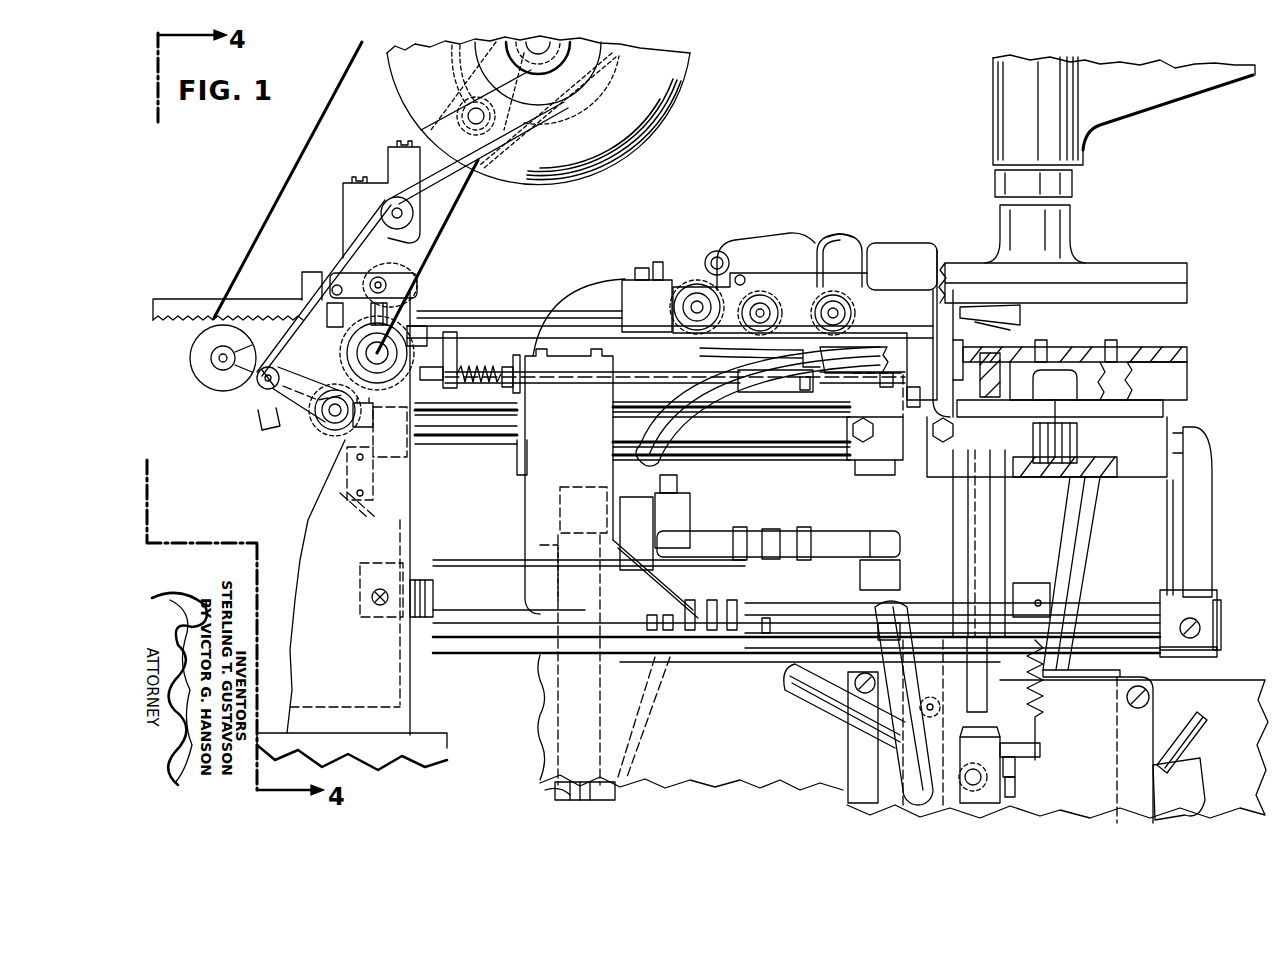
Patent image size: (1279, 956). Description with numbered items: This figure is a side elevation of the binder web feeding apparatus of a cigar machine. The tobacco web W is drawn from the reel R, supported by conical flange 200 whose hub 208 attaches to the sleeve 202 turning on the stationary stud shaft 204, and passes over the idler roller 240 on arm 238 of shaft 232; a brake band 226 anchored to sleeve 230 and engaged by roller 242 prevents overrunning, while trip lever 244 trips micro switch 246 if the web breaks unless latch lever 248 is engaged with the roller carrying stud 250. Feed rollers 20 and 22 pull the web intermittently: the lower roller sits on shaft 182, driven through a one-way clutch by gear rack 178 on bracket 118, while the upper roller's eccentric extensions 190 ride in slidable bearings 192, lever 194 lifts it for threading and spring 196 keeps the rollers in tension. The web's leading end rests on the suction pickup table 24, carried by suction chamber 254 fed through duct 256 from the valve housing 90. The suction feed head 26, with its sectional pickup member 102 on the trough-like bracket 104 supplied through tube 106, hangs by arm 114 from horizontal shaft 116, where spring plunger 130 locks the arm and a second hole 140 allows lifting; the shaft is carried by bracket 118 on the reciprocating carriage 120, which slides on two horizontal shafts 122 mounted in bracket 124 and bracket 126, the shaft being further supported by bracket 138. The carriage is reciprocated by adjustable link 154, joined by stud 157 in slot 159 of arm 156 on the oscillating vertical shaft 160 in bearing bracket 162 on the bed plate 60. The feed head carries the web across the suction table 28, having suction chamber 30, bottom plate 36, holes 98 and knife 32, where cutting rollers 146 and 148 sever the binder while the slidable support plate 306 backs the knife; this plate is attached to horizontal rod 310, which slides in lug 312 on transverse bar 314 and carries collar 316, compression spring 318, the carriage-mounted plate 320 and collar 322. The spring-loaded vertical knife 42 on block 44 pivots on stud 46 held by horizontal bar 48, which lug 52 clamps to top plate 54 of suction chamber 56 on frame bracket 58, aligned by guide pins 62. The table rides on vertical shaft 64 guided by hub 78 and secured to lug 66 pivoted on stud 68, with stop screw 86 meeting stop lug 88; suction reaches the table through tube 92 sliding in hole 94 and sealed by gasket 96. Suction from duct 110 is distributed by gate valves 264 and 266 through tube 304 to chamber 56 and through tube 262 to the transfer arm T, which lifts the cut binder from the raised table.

The tobacco web W is at (318, 130).
The reel R is at (684, 77).
The binder transfer arm T is at (1085, 262).
The upper web feed roller 20 is at (420, 290).
The lower web feed roller 22 is at (418, 308).
The suction pickup table 24 is at (571, 336).
The reciprocating suction feed head 26 is at (848, 228).
The suction table 28 is at (1157, 350).
The suction chamber 30 is at (1128, 380).
The knife 32 is at (903, 360).
The bottom plate 36 is at (1115, 370).
The swingable spring-loaded vertical knife 42 is at (1018, 322).
The block 44 is at (956, 328).
The vertical stud 46 is at (942, 268).
The horizontal bar 48 is at (952, 370).
The lug 52 is at (745, 362).
The top plate 54 is at (1170, 417).
The suction chamber 56 is at (1160, 443).
The frame bracket 58 is at (1110, 573).
The bed plate 60 is at (1255, 677).
The guide pins 62 is at (905, 388).
The vertical shaft 64 is at (1005, 375).
The lug 66 is at (1003, 766).
The stud 68 is at (973, 770).
The hub 78 is at (1010, 540).
The adjustable stop screw 86 is at (1010, 745).
The stop lug 88 is at (1000, 786).
The valve housing 90 is at (1150, 702).
The tube 92 is at (1077, 446).
The hole 94 is at (1075, 414).
The gasket 96 is at (1085, 453).
The holes 98 is at (1028, 347).
The sectional pickup member 102 is at (880, 287).
The hollow trough-like supporting bracket 104 is at (845, 240).
The tube 106 is at (818, 261).
The duct 110 is at (1190, 768).
The arm 114 is at (750, 242).
The horizontal shaft 116 is at (688, 265).
The bracket 118 is at (609, 290).
The reciprocating carriage 120 is at (525, 522).
The horizontal shafts 122 is at (465, 445).
The bracket 124 is at (302, 292).
The bracket 126 is at (1212, 552).
The spring plunger 130 is at (714, 250).
The bracket 138 is at (625, 340).
The second hole 140 is at (757, 258).
The cutting roller 146 is at (856, 306).
The cutting roller 148 is at (762, 283).
The adjustable link 154 is at (700, 528).
The arm 156 is at (690, 492).
The stud 157 is at (680, 478).
The slot 159 is at (657, 488).
The oscillating vertical shaft 160 is at (595, 480).
The bearing bracket 162 is at (558, 548).
The horizontal gear rack 178 is at (205, 300).
The horizontal shaft 182 is at (437, 337).
The eccentric extensions 190 is at (368, 256).
The vertically slidable bearings 192 is at (420, 275).
The lever 194 is at (345, 268).
The spring 196 is at (348, 312).
The conical flange 200 is at (587, 84).
The sleeve 202 is at (565, 60).
The stationary stud shaft 204 is at (548, 48).
The hub 208 is at (580, 68).
The brake band 226 is at (343, 252).
The sleeve 230 is at (325, 428).
The shaft 232 is at (330, 432).
The arm 238 is at (283, 386).
The idler roller 240 is at (208, 374).
The roller 242 is at (270, 392).
The trip lever 244 is at (345, 475).
The micro switch 246 is at (345, 492).
The latch lever 248 is at (260, 420).
The roller carrying stud 250 is at (262, 386).
The suction chamber 254 is at (748, 350).
The hose or duct 256 is at (672, 402).
The tube 262 is at (1192, 728).
The gate valve 264 is at (960, 645).
The gate valve 266 is at (1118, 670).
The duct or tube 304 is at (1058, 545).
The horizontally slidable support plate 306 is at (822, 365).
The horizontal rod 310 is at (670, 375).
The lug 312 is at (436, 385).
The transverse bar 314 is at (464, 313).
The collar 316 is at (500, 385).
The compression spring 318 is at (468, 375).
The lug or plate 320 is at (518, 356).
The collar 322 is at (805, 393).